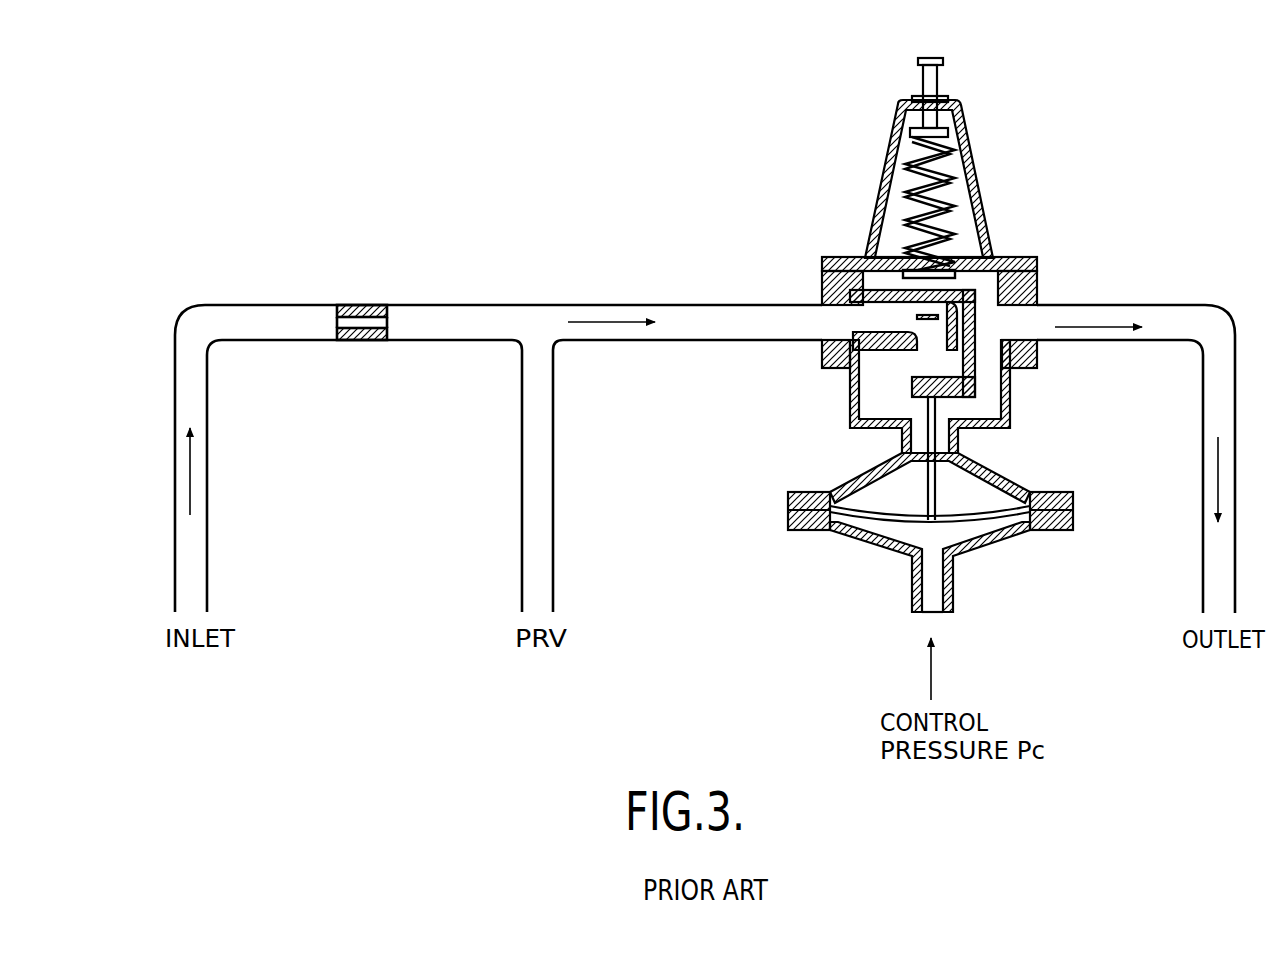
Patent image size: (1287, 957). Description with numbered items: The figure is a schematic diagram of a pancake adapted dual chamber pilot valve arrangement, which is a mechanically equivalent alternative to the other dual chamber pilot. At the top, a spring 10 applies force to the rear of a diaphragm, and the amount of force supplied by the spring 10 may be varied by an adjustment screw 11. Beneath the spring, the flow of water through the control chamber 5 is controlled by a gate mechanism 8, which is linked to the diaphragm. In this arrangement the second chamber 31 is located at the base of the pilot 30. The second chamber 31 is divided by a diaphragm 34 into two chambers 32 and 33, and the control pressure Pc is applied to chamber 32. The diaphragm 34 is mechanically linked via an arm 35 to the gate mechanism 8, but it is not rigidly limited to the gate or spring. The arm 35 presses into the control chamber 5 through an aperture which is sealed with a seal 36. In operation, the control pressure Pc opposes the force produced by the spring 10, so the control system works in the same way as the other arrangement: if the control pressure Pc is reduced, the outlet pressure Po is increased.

The control chamber 5 is at (870, 385).
The gate mechanism 8 is at (982, 368).
The spring 10 is at (958, 208).
The adjustment screw 11 is at (946, 61).
The pilot 30 is at (1000, 150).
The second chamber 31 is at (868, 562).
The chamber 32 is at (977, 536).
The chamber 33 is at (968, 478).
The diaphragm 34 is at (1048, 494).
The arm 35 is at (905, 436).
The seal 36 is at (927, 462).